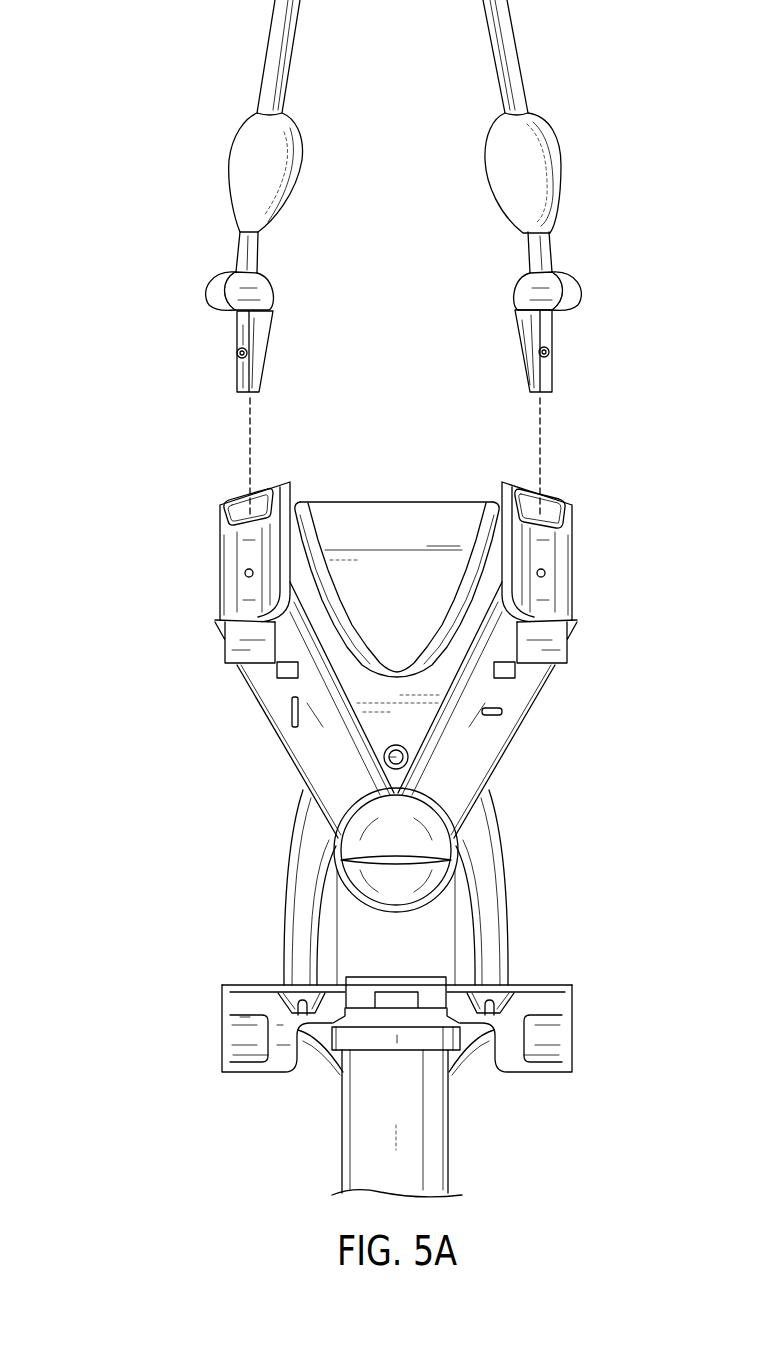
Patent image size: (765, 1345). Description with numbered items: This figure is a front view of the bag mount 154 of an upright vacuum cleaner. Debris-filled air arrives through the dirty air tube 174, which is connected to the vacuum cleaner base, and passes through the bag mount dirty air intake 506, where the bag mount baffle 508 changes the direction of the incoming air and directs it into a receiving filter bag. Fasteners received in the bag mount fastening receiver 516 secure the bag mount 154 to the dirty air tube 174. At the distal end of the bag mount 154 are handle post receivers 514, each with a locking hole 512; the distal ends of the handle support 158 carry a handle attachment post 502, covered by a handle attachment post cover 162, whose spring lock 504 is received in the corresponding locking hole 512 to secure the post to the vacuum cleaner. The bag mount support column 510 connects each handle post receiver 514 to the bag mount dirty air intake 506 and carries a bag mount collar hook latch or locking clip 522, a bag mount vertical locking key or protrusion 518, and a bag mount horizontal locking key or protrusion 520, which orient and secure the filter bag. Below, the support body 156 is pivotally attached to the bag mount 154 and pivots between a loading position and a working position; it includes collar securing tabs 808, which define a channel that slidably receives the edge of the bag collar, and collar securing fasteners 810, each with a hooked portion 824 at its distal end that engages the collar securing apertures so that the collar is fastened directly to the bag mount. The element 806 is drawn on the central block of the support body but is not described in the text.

The bag mount 154 is at (113, 726).
The support body 156 is at (515, 1027).
The handle support 158 is at (270, 96).
The handle attachment post cover 162 is at (288, 160).
The dirty air tube 174 is at (423, 1142).
The handle attachment post 502 is at (257, 362).
The spring lock 504 is at (549, 352).
The bag mount dirty air intake 506 is at (416, 888).
The bag mount baffle 508 is at (416, 834).
The bag mount support column 510 is at (302, 747).
The locking hole 512 is at (245, 575).
The handle post receiver 514 is at (240, 503).
The bag mount fastening receiver 516 is at (404, 758).
The bag mount vertical locking key 518 is at (291, 710).
The bag mount horizontal locking key 520 is at (500, 712).
The bag mount collar hook latch 522 is at (281, 672).
The center block 806 is at (428, 985).
The collar securing tabs 808 is at (237, 1032).
The collar securing fasteners 810 is at (296, 1003).
The hooked portion 824 is at (303, 1006).